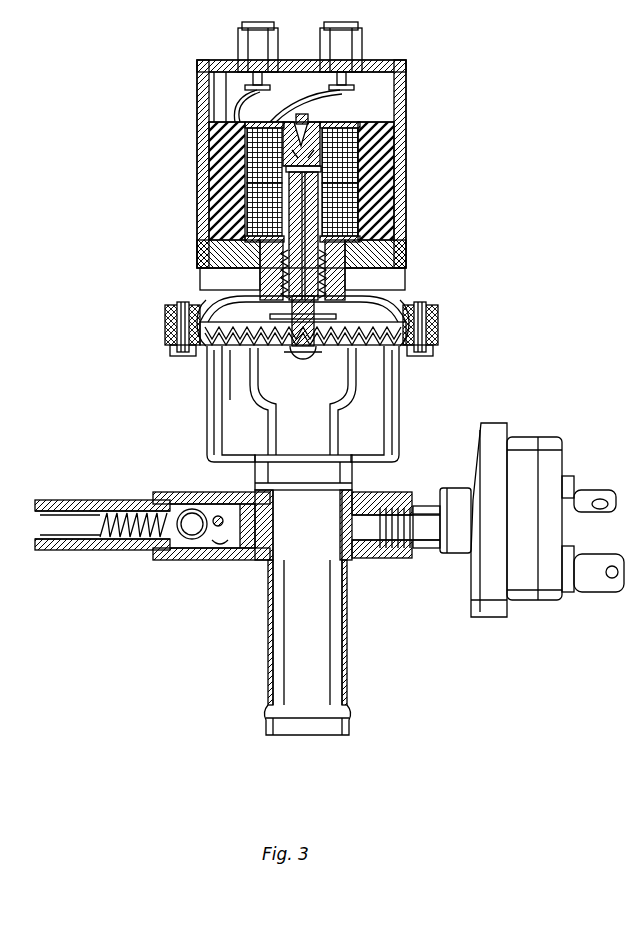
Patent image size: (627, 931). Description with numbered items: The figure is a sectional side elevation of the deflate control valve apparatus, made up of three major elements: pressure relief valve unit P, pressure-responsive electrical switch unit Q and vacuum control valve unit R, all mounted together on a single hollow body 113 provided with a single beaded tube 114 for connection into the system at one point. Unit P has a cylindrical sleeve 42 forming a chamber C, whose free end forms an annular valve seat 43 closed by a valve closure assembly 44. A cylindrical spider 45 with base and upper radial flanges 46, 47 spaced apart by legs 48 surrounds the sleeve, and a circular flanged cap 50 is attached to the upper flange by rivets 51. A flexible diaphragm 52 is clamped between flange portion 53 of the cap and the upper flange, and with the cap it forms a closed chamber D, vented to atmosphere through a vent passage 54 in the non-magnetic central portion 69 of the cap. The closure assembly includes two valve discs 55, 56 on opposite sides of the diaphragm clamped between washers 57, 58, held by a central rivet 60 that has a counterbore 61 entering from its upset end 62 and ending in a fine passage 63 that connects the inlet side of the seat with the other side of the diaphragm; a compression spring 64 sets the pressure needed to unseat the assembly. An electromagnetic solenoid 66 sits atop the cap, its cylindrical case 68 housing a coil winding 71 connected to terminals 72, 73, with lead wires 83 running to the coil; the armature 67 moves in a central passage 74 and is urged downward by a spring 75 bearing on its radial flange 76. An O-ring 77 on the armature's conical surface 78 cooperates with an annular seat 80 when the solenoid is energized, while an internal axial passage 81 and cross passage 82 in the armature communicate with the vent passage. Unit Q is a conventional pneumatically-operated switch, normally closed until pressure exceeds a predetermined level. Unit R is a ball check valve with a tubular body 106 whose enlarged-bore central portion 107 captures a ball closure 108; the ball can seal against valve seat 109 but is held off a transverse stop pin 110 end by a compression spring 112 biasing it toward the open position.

The cylindrical sleeve 42 is at (226, 428).
The annular valve seat 43 is at (390, 366).
The valve closure assembly 44 is at (224, 284).
The cylindrical spider 45 is at (210, 380).
The base radial flange 46 is at (396, 465).
The upper radial flange 47 is at (438, 340).
The legs 48 is at (390, 420).
The circular flanged cap 50 is at (440, 302).
The rivets 51 is at (176, 356).
The flexible diaphragm 52 is at (165, 330).
The flange portion 53 is at (178, 312).
The vent passage 54 is at (248, 270).
The valve disc 55 is at (388, 300).
The valve disc 56 is at (410, 352).
The washer 57 is at (366, 310).
The washer 58 is at (222, 396).
The rivet 60 is at (313, 356).
The counterbore 61 is at (290, 356).
The upset end 62 is at (260, 275).
The fine passage 63 is at (303, 360).
The compression spring 64 is at (345, 270).
The electromagnetic solenoid 66 is at (409, 122).
The armature 67 is at (340, 226).
The cylindrical case 68 is at (197, 82).
The central portion 69 is at (345, 268).
The coil winding 71 is at (248, 160).
The terminal 72 is at (240, 45).
The terminal 73 is at (352, 50).
The central passage 74 is at (320, 218).
The spring 75 is at (230, 246).
The radial flange 76 is at (375, 254).
The O-ring 77 is at (316, 152).
The conical surface 78 is at (325, 136).
The annular seat 80 is at (307, 126).
The internal axial passage 81 is at (300, 214).
The internal cross passage 82 is at (292, 178).
The vent opening 83 is at (312, 62).
The tubular body 106 is at (112, 500).
The central portion of enlarged bore 107 is at (224, 556).
The ball closure 108 is at (186, 510).
The valve seat 109 is at (186, 560).
The transverse stop pin 110 is at (219, 516).
The compression spring 112 is at (126, 542).
The hollow body 113 is at (356, 560).
The beaded tube 114 is at (349, 642).
The chamber C is at (302, 414).
The closed chamber D is at (206, 318).
The pressure relief valve unit P is at (452, 316).
The pressure-responsive switch unit Q is at (564, 446).
The vacuum control valve unit R is at (160, 574).